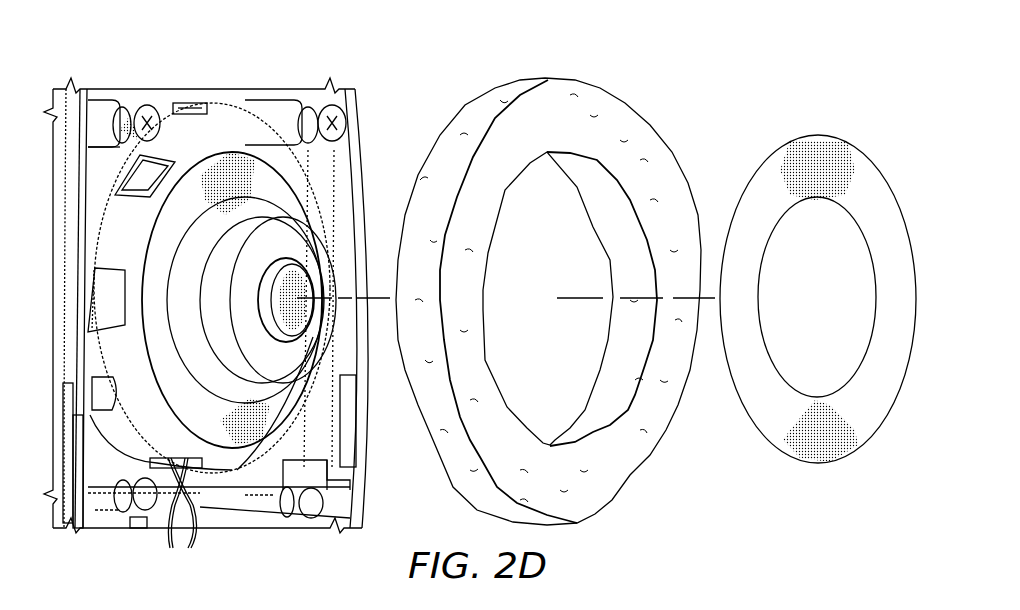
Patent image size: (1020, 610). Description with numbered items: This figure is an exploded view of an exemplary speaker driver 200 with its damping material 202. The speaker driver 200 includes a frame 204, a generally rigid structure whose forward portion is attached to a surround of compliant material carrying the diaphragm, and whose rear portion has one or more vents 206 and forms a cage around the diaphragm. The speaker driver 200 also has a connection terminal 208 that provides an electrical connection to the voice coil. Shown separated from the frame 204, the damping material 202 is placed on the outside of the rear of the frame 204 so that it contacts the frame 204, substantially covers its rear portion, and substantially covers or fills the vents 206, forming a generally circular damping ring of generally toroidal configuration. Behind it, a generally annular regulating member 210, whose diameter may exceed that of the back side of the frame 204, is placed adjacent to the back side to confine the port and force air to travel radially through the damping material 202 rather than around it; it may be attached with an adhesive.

The speaker driver 200 is at (728, 52).
The damping material 202 is at (470, 97).
The frame 204 is at (273, 195).
The vents 206 is at (110, 270).
The connection terminal 208 is at (153, 458).
The regulating member 210 is at (765, 435).